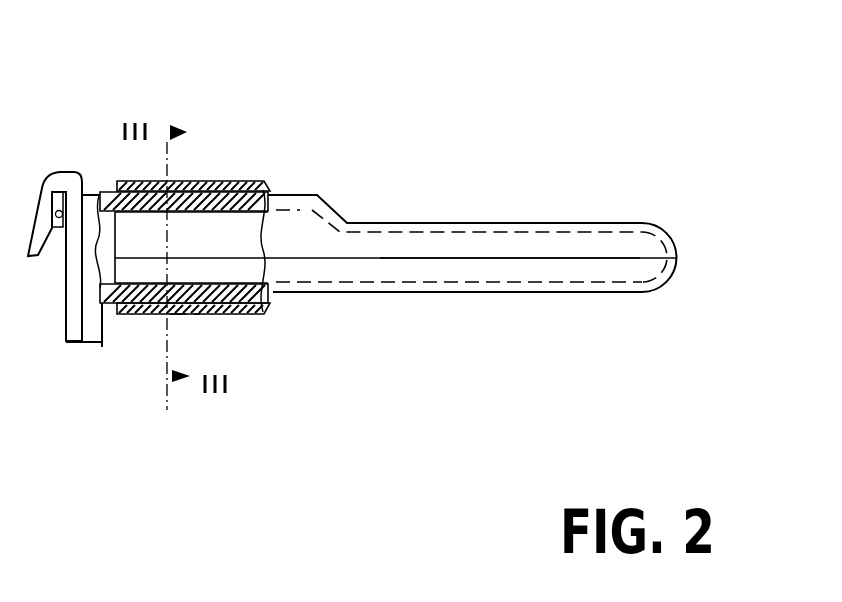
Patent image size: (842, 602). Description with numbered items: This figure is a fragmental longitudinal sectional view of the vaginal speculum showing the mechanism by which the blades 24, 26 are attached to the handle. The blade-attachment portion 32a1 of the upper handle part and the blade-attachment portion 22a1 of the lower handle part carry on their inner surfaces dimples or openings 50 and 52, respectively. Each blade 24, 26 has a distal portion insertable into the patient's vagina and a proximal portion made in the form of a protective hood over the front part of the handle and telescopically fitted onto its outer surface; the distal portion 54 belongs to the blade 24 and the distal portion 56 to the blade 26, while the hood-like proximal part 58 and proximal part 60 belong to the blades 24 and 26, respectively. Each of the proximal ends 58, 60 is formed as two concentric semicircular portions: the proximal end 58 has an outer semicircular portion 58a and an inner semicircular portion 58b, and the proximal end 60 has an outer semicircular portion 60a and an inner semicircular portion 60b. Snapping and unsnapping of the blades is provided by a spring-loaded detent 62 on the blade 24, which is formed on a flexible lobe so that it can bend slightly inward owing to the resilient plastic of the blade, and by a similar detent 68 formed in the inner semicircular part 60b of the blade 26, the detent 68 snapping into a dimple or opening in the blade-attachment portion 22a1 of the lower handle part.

The blade-attachment portion 22a1 is at (137, 318).
The blade 24 is at (486, 255).
The blade 26 is at (488, 319).
The blade-attachment portion 32a1 is at (190, 181).
The dimple or opening 50 is at (124, 306).
The dimple or opening 52 is at (173, 311).
The distal portion 54 is at (598, 216).
The distal portion 56 is at (600, 294).
The proximal part 58 is at (236, 146).
The outer semicircular portion 58a is at (220, 183).
The inner semicircular portion 58b is at (120, 183).
The proximal part 60 is at (258, 367).
The outer semicircular portion 60a is at (157, 314).
The inner semicircular portion 60b is at (222, 313).
The detent 62 is at (167, 183).
The detent 68 is at (197, 311).